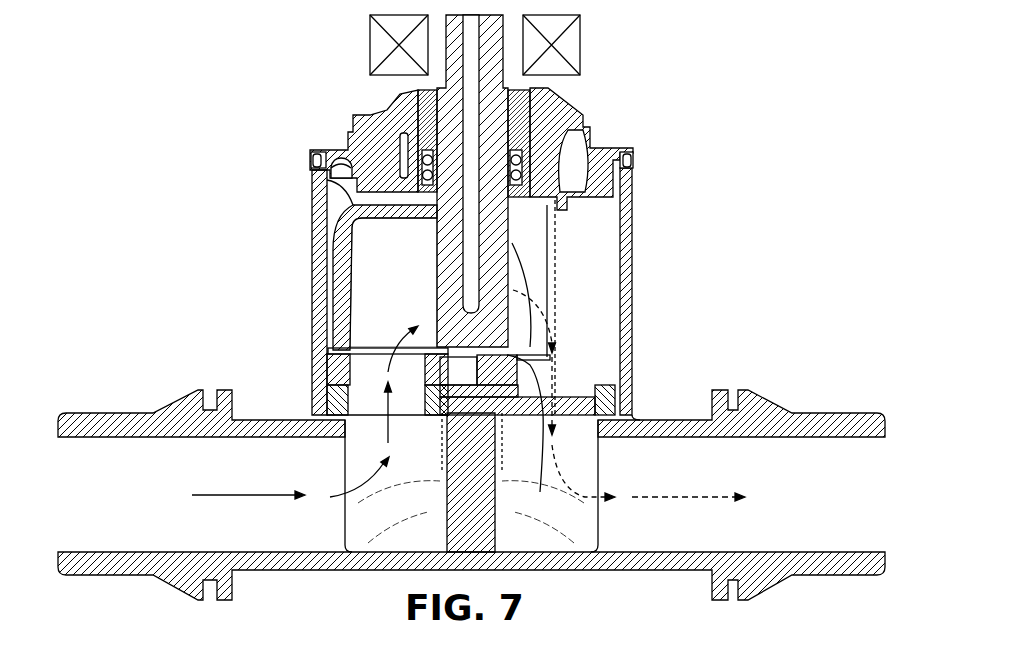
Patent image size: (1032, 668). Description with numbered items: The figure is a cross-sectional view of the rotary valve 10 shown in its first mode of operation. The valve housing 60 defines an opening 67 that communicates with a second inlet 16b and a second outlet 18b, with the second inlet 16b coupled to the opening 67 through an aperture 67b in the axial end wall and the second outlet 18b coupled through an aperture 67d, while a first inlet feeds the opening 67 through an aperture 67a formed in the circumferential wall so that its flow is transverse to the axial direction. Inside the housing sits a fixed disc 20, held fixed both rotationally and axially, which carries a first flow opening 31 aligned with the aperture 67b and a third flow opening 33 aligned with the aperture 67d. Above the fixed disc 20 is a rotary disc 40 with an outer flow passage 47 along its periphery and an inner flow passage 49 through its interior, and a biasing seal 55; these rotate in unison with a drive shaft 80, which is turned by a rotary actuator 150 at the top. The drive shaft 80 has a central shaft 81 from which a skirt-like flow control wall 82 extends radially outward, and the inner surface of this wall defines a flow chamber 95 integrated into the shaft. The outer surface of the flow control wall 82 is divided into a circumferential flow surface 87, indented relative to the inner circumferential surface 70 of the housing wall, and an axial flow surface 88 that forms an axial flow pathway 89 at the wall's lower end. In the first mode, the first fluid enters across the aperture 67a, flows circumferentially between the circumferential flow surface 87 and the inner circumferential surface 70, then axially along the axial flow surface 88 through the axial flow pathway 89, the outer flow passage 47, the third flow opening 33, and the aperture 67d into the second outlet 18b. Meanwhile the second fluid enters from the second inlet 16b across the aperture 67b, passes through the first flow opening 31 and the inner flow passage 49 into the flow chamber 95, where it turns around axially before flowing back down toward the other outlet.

The rotary valve 10 is at (209, 64).
The rotary actuator 150 is at (382, 48).
The drive shaft 80 is at (510, 135).
The opening 67 is at (330, 183).
The circumferential flow surface 87 is at (353, 230).
The flow control wall 82 is at (347, 243).
The flow chamber 95 is at (424, 269).
The central shaft 81 is at (440, 293).
The aperture 67a is at (528, 267).
The axial flow surface 88 is at (540, 287).
The inner circumferential surface 70 is at (617, 212).
The biasing seal 55 is at (332, 347).
The inner flow passage 49 is at (368, 363).
The rotary disc 40 is at (333, 356).
The fixed disc 20 is at (332, 370).
The first flow opening 31 is at (360, 405).
The third flow opening 33 is at (578, 392).
The valve housing 60 is at (639, 406).
The second inlet 16b is at (90, 417).
The second outlet 18b is at (815, 417).
The aperture 67b is at (377, 413).
The outer flow passage 47 is at (528, 390).
The axial flow pathway 89 is at (534, 438).
The aperture 67d is at (570, 417).